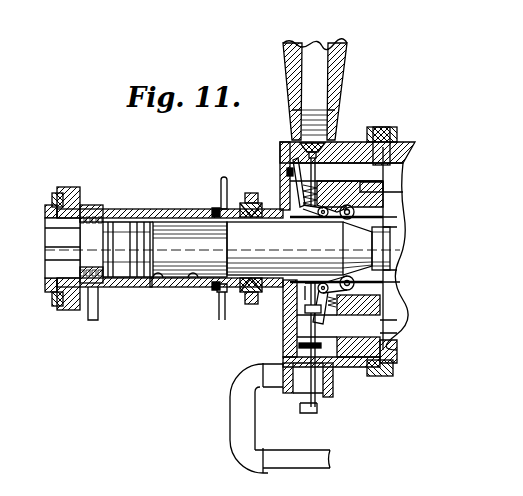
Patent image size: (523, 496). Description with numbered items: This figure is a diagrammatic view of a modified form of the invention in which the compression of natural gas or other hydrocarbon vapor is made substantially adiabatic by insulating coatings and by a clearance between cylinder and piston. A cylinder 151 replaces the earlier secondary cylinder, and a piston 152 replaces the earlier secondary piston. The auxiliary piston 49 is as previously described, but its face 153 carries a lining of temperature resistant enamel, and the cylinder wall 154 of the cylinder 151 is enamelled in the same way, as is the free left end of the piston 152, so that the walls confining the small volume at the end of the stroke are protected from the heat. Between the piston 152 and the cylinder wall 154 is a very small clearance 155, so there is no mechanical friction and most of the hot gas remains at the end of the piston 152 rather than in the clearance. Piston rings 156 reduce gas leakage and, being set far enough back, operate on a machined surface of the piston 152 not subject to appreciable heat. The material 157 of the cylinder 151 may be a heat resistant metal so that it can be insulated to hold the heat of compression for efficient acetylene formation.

The auxiliary piston 49 is at (130, 289).
The cylinder 151 is at (175, 227).
The piston 152 is at (240, 253).
The face 153 is at (155, 288).
The cylinder wall 154 is at (192, 283).
The clearance 155 is at (233, 213).
The piston rings 156 is at (268, 293).
The material 157 is at (212, 187).